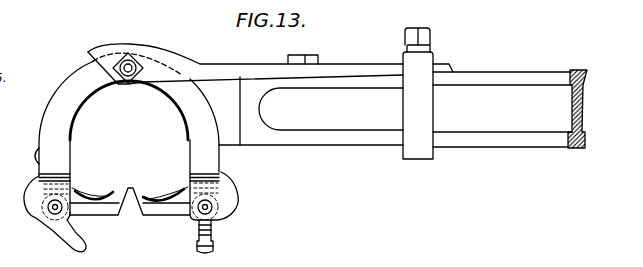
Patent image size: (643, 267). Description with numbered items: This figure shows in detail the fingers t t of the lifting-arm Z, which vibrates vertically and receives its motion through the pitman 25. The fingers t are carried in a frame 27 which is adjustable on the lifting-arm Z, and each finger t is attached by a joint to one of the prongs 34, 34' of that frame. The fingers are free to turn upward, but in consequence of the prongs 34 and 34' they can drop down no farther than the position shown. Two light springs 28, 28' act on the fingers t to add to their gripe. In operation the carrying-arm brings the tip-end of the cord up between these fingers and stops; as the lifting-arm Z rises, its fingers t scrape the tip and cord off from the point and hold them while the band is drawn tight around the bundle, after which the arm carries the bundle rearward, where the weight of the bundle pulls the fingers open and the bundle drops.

The frame 27 is at (219, 129).
The light spring 28 is at (92, 190).
The light spring 28' is at (165, 191).
The prong 34 is at (47, 214).
The prong 34' is at (226, 196).
The pitman 25 is at (244, 247).
The lifting-arm Z is at (495, 93).
The finger t is at (130, 209).